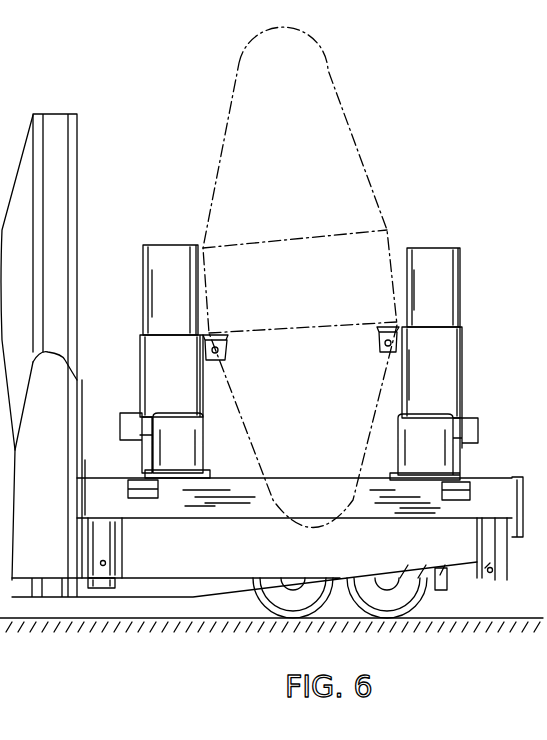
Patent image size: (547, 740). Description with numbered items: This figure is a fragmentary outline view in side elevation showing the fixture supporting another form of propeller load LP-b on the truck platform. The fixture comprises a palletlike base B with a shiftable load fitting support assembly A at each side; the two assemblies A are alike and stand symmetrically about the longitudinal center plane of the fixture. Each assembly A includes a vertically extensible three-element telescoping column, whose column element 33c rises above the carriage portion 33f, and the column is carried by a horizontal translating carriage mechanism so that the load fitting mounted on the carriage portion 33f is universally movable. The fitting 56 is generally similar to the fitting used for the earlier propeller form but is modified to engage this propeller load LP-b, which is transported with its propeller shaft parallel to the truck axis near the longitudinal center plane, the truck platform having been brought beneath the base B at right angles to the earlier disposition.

The telescoping column element 33c is at (473, 344).
The carriage portion 33f is at (476, 392).
The fitting 56 is at (377, 345).
The load fitting support assembly A is at (211, 432).
The palletlike base B is at (478, 480).
The propeller load LP-b is at (355, 137).